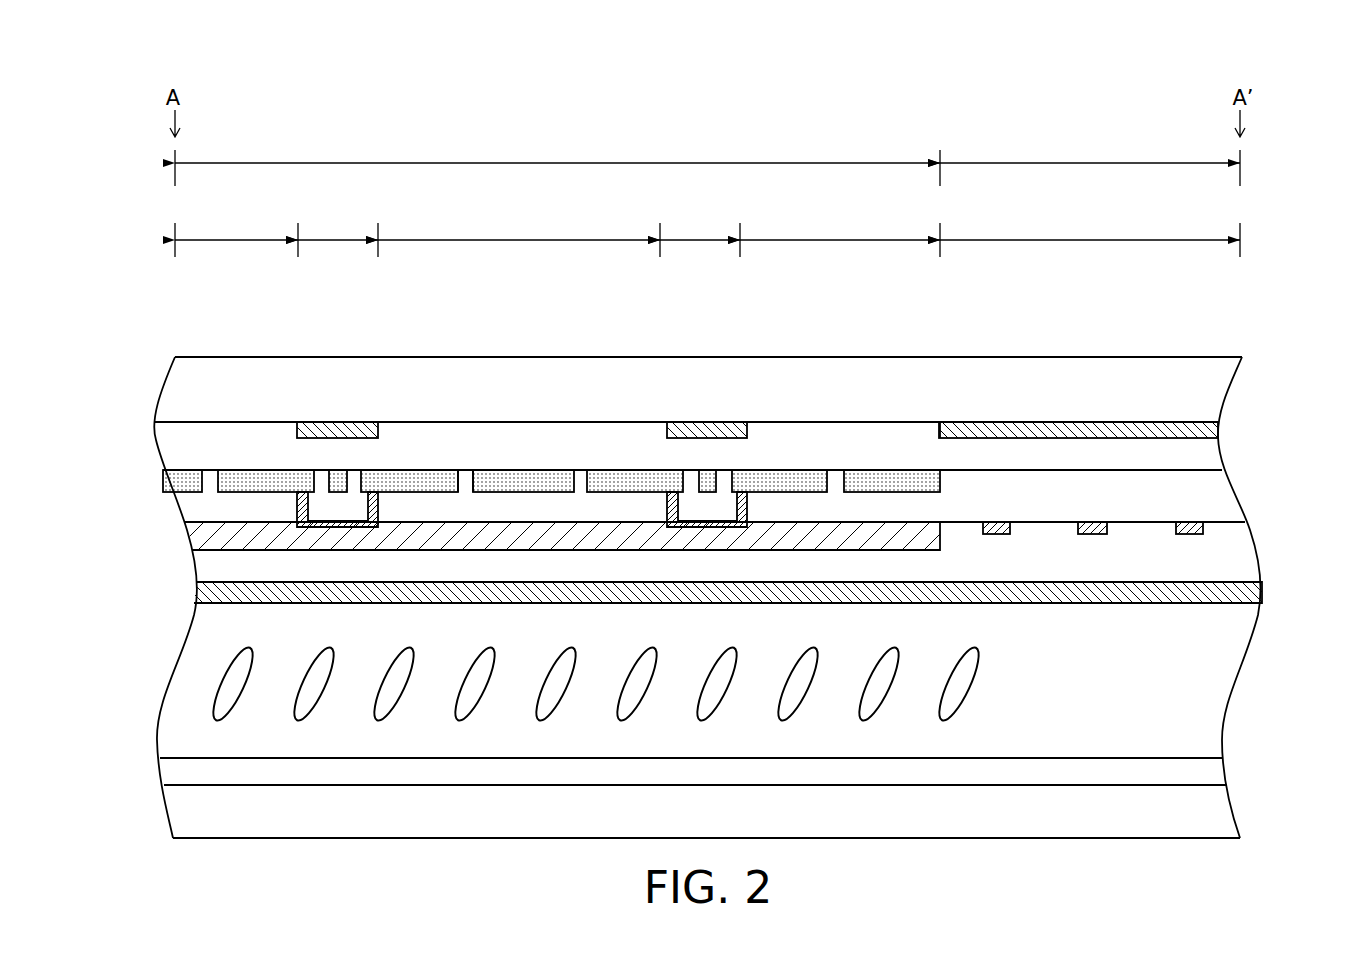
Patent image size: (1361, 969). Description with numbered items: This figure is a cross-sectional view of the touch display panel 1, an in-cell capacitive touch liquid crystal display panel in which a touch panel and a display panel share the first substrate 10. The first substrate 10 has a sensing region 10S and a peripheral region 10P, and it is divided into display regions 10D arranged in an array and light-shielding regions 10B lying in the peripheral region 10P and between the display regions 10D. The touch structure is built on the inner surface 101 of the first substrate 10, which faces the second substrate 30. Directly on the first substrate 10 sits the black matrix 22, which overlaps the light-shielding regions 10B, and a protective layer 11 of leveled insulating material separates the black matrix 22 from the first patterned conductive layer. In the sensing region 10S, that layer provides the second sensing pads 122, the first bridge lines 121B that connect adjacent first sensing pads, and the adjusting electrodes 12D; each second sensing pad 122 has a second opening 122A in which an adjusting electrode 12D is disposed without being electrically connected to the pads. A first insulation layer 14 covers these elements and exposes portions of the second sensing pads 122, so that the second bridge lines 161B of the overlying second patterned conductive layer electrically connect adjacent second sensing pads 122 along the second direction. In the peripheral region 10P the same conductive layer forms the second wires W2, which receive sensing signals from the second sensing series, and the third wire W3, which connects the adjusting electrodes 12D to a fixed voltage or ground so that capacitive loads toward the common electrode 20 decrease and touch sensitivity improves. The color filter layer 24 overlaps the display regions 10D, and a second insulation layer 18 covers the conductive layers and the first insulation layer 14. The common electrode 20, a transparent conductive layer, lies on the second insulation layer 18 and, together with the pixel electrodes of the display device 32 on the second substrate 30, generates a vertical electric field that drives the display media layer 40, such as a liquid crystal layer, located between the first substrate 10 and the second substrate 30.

The touch display panel 1 is at (1279, 118).
The first substrate 10 is at (1178, 390).
The sensing region 10S is at (557, 162).
The peripheral region 10P is at (1090, 162).
The display regions 10D is at (707, 235).
The light-shielding regions 10B is at (769, 227).
The protective layer 11 is at (170, 443).
The adjusting electrodes 12D is at (172, 481).
The second sensing pads 122 is at (790, 478).
The first bridge lines 121B is at (706, 478).
The second opening 122A is at (471, 500).
The black matrix 22 is at (1095, 425).
The inner surface 101 is at (930, 421).
The first insulation layer 14 is at (190, 508).
The second bridge lines 161B is at (667, 507).
The color filter layer 24 is at (198, 543).
The second insulation layer 18 is at (212, 573).
The common electrode 20 is at (215, 595).
The display media layer 40 is at (185, 680).
The display device 32 is at (175, 773).
The second substrate 30 is at (694, 827).
The second wires W2 is at (1093, 535).
The third wire W3 is at (1190, 535).